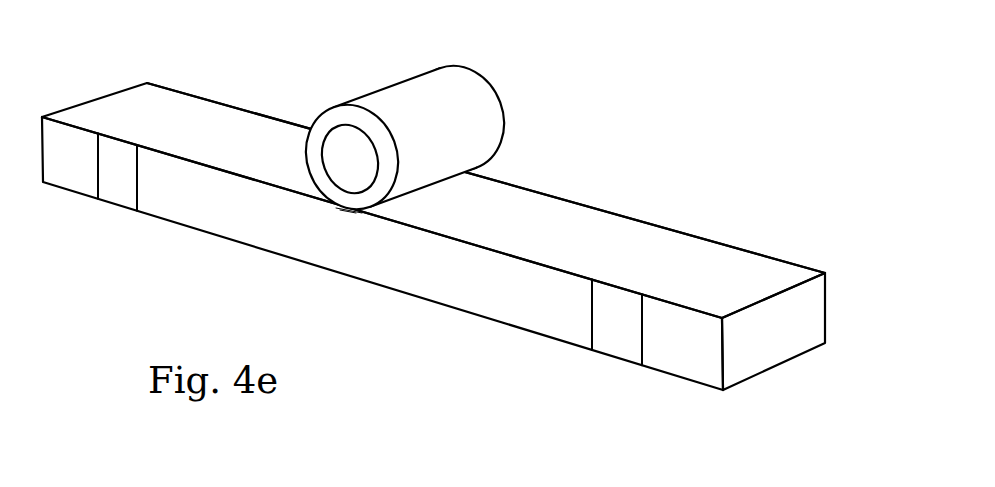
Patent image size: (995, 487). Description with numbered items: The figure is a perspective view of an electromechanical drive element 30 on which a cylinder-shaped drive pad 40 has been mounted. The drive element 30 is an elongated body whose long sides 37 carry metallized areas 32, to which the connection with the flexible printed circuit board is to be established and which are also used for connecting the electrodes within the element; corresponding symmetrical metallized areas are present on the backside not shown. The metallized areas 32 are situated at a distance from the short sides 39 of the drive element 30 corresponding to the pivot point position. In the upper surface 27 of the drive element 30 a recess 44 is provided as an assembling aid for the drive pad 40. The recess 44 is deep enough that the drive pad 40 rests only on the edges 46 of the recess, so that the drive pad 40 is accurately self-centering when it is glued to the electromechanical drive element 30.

The upper surface 27 is at (205, 122).
The electromechanical drive element 30 is at (613, 222).
The metallized areas 32 is at (115, 188).
The long sides 37 is at (465, 287).
The short sides 39 is at (780, 348).
The drive pad 40 is at (482, 118).
The recess 44 is at (348, 213).
The edges of the recess 46 is at (338, 209).